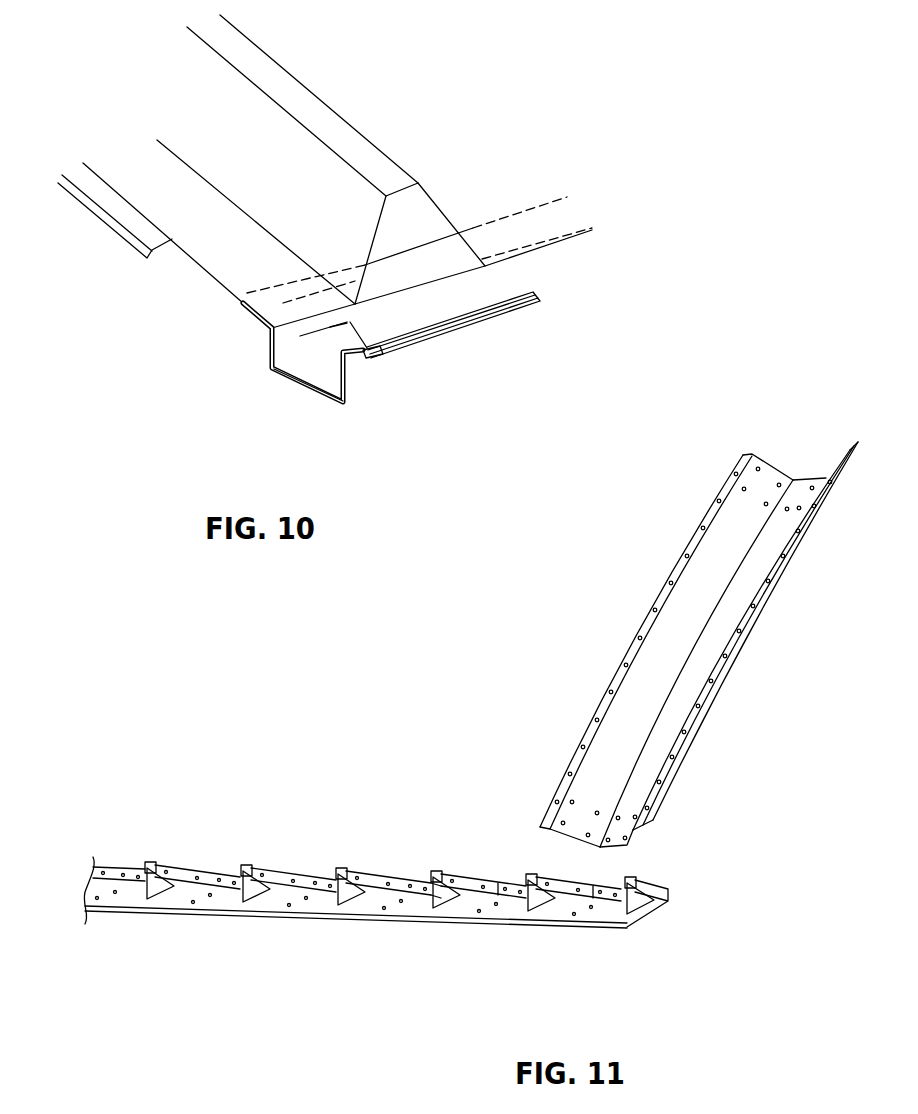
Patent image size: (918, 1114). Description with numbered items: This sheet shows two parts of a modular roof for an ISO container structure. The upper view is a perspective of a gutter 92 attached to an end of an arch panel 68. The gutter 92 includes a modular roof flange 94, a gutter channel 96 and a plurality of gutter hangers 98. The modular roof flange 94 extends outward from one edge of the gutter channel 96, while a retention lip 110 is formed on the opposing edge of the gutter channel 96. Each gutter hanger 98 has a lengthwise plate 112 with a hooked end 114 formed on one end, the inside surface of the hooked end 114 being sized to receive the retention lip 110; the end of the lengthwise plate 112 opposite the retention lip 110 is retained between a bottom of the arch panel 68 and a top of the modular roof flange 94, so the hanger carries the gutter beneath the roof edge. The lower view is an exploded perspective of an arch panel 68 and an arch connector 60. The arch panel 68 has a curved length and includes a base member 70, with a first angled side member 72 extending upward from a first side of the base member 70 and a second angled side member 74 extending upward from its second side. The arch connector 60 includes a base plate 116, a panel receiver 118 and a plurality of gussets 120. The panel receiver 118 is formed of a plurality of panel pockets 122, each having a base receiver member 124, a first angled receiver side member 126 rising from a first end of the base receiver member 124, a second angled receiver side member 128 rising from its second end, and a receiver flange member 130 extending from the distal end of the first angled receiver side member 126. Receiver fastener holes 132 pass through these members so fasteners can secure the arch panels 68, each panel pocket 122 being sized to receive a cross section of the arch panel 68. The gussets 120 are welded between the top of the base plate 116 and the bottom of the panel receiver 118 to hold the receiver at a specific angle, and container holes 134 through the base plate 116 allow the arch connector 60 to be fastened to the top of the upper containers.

In FIG. 11, the arch connector 60 is at (293, 830).
In FIG. 10, the arch panel 68 is at (205, 277).
In FIG. 11, the arch panel 68 is at (757, 635).
In FIG. 10, the base member 70 is at (212, 245).
In FIG. 11, the base member 70 is at (793, 495).
In FIG. 11, the first angled side member 72 is at (763, 483).
In FIG. 11, the second angled side member 74 is at (623, 832).
In FIG. 10, the gutter 92 is at (275, 383).
In FIG. 10, the modular roof flange 94 is at (253, 313).
In FIG. 10, the gutter channel 96 is at (308, 372).
In FIG. 10, the gutter hanger 98 is at (347, 325).
In FIG. 10, the retention lip 110 is at (355, 366).
In FIG. 10, the lengthwise plate 112 is at (340, 322).
In FIG. 10, the hooked end 114 is at (375, 358).
In FIG. 11, the base plate 116 is at (558, 910).
In FIG. 11, the panel receiver 118 is at (485, 878).
In FIG. 11, the gusset 120 is at (343, 912).
In FIG. 11, the panel pocket 122 is at (183, 867).
In FIG. 11, the base receiver member 124 is at (412, 893).
In FIG. 11, the first angled receiver side member 126 is at (362, 868).
In FIG. 11, the second angled receiver side member 128 is at (431, 871).
In FIG. 11, the receiver flange member 130 is at (342, 870).
In FIG. 11, the receiver fastener holes 132 is at (393, 908).
In FIG. 11, the container holes 134 is at (192, 902).